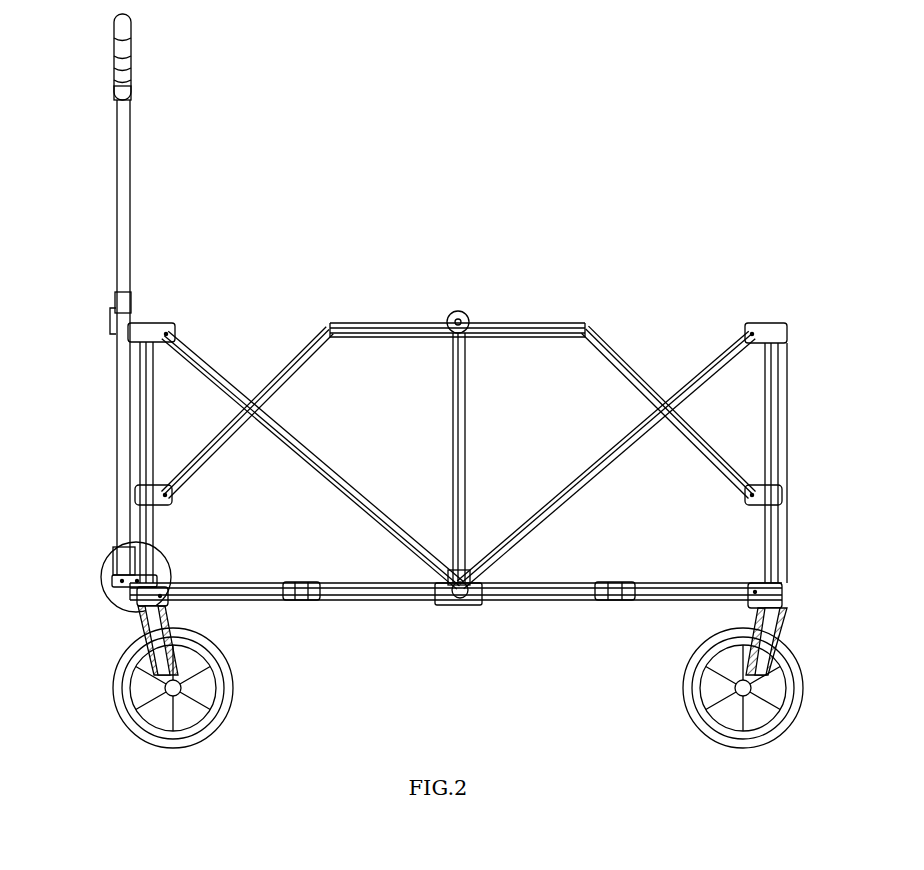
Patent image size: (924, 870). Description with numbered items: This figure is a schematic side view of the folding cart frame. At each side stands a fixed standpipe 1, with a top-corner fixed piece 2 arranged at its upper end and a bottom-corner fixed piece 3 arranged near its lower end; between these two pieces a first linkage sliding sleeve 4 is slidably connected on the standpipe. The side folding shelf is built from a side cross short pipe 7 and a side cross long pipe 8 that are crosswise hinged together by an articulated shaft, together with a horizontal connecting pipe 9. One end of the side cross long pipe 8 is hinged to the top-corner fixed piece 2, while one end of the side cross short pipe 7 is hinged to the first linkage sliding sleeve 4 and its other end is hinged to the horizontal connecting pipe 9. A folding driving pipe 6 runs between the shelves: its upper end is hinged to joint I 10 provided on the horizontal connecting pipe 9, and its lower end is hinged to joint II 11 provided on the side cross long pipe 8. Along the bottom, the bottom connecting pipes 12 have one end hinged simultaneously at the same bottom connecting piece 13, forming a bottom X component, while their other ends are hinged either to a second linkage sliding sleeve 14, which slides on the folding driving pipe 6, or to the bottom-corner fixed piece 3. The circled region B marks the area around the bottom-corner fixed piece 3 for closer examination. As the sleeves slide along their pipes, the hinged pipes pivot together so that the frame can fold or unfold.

The fixed standpipes 1 is at (150, 415).
The top-corner fixed piece 2 is at (160, 330).
The bottom-corner fixed piece 3 is at (152, 592).
The first linkage sliding sleeve 4 is at (160, 495).
The folding driving pipe 6 is at (465, 455).
The side cross short pipe 7 is at (288, 362).
The side cross long pipe 8 is at (300, 458).
The horizontal connecting pipe 9 is at (533, 330).
The joint I 10 is at (452, 318).
The joint II 11 is at (463, 604).
The bottom connecting pipes 12 is at (228, 603).
The bottom connecting piece 13 is at (305, 596).
The second linkage sliding sleeve 14 is at (453, 604).
The detail region B is at (123, 577).